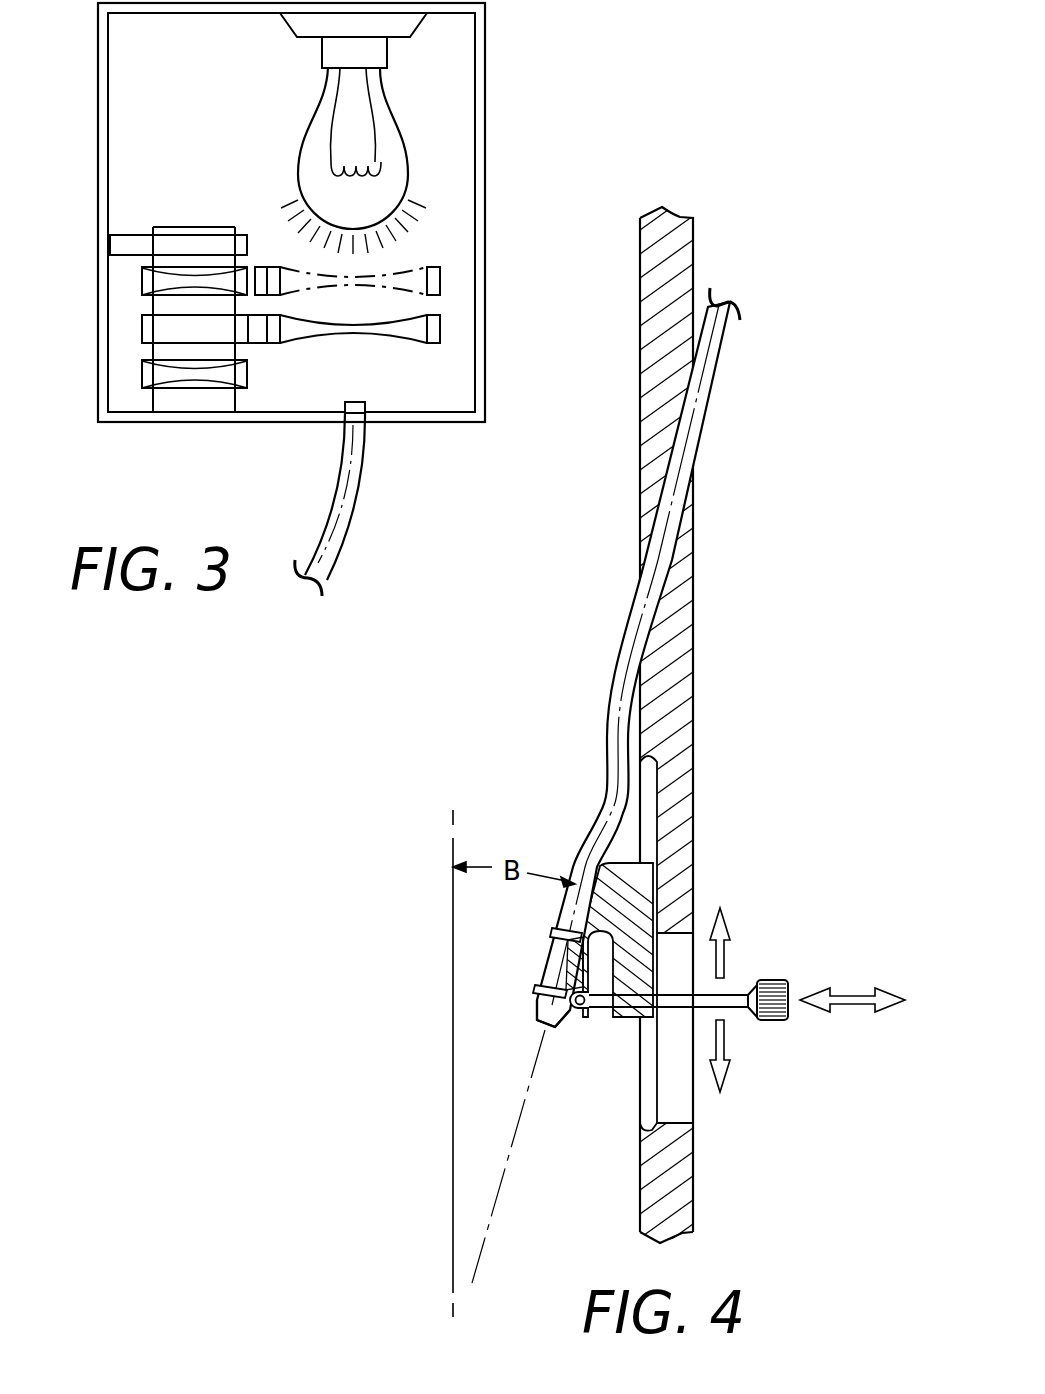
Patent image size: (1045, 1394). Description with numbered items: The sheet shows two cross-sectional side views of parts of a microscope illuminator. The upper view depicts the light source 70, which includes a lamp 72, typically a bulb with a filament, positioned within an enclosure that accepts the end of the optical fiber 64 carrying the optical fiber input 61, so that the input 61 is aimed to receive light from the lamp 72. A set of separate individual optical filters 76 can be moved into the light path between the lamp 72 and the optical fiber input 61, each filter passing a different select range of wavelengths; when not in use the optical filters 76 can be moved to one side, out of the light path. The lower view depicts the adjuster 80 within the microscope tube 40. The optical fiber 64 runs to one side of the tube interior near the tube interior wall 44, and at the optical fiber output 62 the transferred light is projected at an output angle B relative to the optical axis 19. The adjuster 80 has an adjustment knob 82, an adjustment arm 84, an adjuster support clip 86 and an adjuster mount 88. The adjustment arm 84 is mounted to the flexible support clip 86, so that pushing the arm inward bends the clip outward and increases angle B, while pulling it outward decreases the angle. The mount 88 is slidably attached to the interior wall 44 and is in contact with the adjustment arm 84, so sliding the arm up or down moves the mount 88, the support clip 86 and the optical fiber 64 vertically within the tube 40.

In FIG. 4, the optical axis 19 is at (452, 900).
In FIG. 4, the microscope tube 40 is at (702, 671).
In FIG. 4, the tube interior wall 44 is at (642, 1210).
In FIG. 3, the optical fiber input 61 is at (350, 392).
In FIG. 4, the optical fiber output 62 is at (533, 1026).
In FIG. 3, the optical fiber 64 is at (340, 500).
In FIG. 4, the optical fiber 64 is at (614, 705).
In FIG. 3, the light source 70 is at (492, 108).
In FIG. 3, the lamp 72 is at (405, 152).
In FIG. 3, the optical filters 76 is at (433, 325).
In FIG. 4, the adjuster 80 is at (580, 1024).
In FIG. 4, the adjustment knob 82 is at (770, 1017).
In FIG. 4, the adjustment arm 84 is at (733, 998).
In FIG. 4, the adjuster support clip 86 is at (568, 957).
In FIG. 4, the adjuster mount 88 is at (625, 1018).